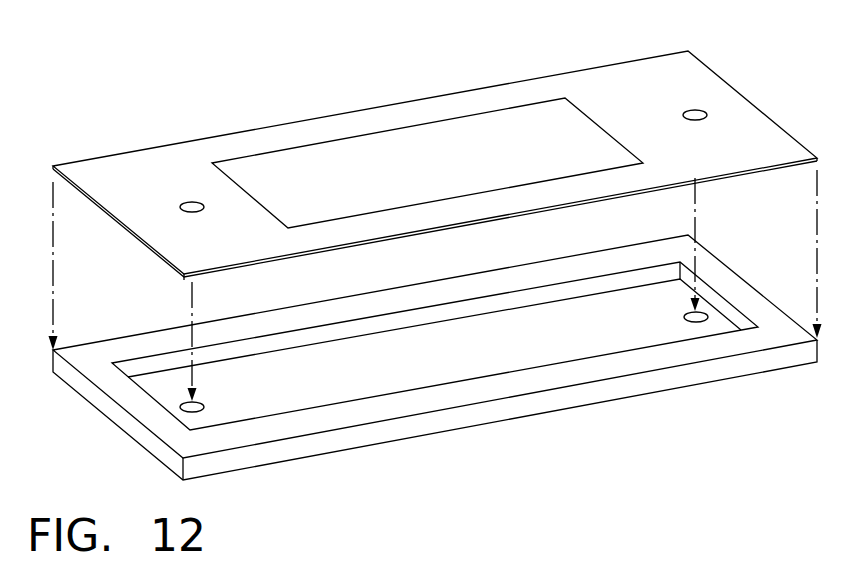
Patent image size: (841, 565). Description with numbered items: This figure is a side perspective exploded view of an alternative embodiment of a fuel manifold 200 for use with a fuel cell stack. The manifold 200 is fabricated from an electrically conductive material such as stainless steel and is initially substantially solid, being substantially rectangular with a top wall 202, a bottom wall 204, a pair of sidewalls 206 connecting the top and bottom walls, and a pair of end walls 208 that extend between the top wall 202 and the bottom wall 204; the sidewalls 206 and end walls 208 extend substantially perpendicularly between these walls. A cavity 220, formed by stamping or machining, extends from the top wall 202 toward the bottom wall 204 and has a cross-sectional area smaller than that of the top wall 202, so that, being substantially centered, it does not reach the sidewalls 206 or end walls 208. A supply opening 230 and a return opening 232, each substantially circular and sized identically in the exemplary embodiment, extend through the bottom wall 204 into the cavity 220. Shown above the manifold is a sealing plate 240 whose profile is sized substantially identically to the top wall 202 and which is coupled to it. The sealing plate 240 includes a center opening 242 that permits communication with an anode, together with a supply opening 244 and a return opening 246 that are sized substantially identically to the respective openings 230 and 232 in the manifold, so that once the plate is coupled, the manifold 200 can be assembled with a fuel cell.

The fuel manifold 200 is at (126, 52).
The top wall 202 is at (628, 367).
The bottom wall 204 is at (725, 383).
The sidewalls 206 is at (560, 402).
The end walls 208 is at (743, 280).
The cavity 220 is at (479, 336).
The supply opening 230 is at (689, 314).
The return opening 232 is at (199, 404).
The sealing plate 240 is at (652, 77).
The center opening 242 is at (417, 139).
The supply opening 244 is at (700, 112).
The return opening 246 is at (192, 204).